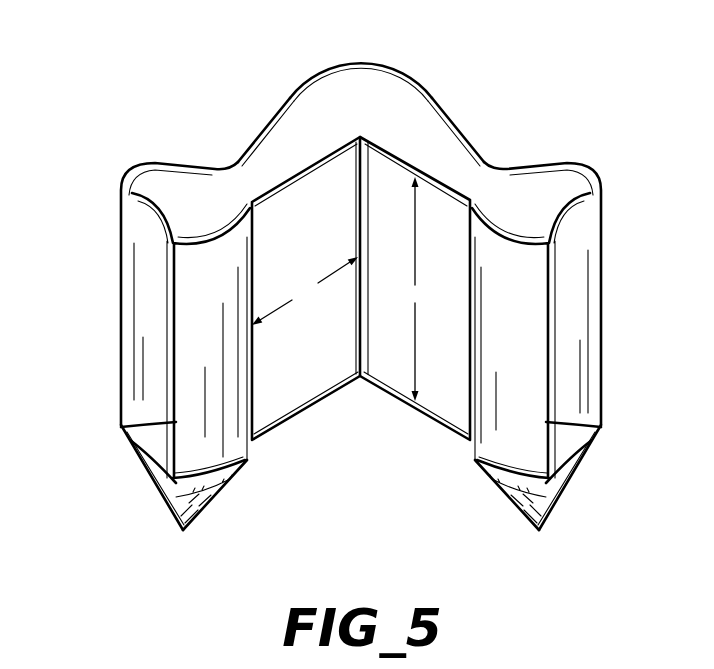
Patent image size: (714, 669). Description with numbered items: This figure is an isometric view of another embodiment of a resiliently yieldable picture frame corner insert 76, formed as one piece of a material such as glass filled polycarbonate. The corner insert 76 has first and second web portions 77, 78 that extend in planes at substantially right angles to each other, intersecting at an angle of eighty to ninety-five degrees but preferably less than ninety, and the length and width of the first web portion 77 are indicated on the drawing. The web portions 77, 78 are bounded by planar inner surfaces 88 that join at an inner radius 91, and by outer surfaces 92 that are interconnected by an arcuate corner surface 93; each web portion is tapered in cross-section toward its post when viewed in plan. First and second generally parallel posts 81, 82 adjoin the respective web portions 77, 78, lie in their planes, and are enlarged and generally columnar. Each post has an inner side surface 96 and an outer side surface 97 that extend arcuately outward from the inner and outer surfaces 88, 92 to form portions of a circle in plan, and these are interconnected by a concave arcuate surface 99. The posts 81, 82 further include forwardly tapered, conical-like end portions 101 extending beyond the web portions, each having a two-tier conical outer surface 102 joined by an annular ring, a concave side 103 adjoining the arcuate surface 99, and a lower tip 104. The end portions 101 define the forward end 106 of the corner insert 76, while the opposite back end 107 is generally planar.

The picture frame corner insert 76 is at (363, 505).
The first web portion 77 is at (272, 110).
The second web portion 78 is at (455, 110).
The first post 81 is at (110, 354).
The second post 82 is at (612, 358).
The planar inner surfaces 88 is at (280, 407).
The inner radius 91 is at (378, 165).
The outer surfaces 92 is at (257, 143).
The arcuate corner surface 93 is at (317, 68).
The inner side surface 96 is at (133, 438).
The outer side surface 97 is at (158, 163).
The concave arcuate surface 99 is at (137, 258).
The forwardly tapered end portion 101 is at (213, 519).
The outer surface of end portion 102 is at (228, 485).
The concave side 103 is at (155, 468).
The lower tip 104 is at (183, 530).
The forward end 106 is at (366, 388).
The back end 107 is at (355, 103).